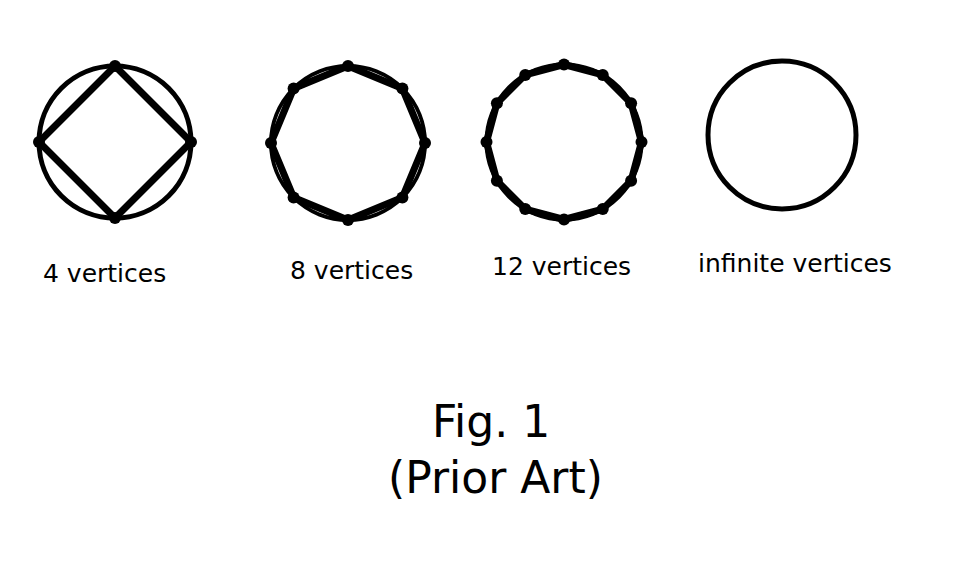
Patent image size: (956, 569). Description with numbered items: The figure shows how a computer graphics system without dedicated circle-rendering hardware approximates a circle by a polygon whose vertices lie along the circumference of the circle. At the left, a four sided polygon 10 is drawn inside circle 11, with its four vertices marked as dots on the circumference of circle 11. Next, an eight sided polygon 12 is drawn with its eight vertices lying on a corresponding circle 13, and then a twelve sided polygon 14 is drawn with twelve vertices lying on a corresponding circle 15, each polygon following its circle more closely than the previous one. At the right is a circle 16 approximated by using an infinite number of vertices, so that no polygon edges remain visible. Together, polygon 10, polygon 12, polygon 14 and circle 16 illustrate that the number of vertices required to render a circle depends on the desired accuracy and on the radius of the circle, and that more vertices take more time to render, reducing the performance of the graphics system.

The four sided polygon 10 is at (140, 190).
The circle 11 is at (177, 97).
The eight sided polygon 12 is at (373, 210).
The circle approximated by octagon 13 is at (385, 80).
The twelve sided polygon 14 is at (613, 198).
The circle approximated by dodecagon 15 is at (593, 75).
The circle 16 is at (798, 135).